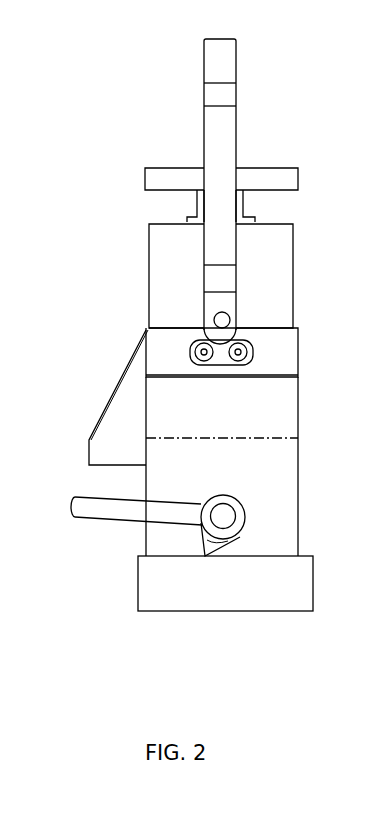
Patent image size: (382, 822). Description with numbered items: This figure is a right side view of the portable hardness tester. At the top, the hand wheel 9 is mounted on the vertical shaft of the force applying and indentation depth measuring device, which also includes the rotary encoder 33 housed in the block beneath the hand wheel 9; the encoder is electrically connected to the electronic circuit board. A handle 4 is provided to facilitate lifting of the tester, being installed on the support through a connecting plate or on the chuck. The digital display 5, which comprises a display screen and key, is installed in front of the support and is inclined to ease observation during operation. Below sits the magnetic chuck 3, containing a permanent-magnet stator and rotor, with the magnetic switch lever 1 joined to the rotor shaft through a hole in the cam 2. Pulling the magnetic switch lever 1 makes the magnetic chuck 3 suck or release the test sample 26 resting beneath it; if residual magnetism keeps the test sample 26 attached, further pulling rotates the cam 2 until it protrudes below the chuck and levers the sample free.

The magnetic switch lever 1 is at (136, 577).
The cam 2 is at (191, 576).
The magnetic chuck 3 is at (164, 466).
The handle 4 is at (132, 177).
The digital display 5 is at (164, 396).
The hand wheel 9 is at (163, 168).
The test sample 26 is at (225, 606).
The rotary encoder 33 is at (160, 276).